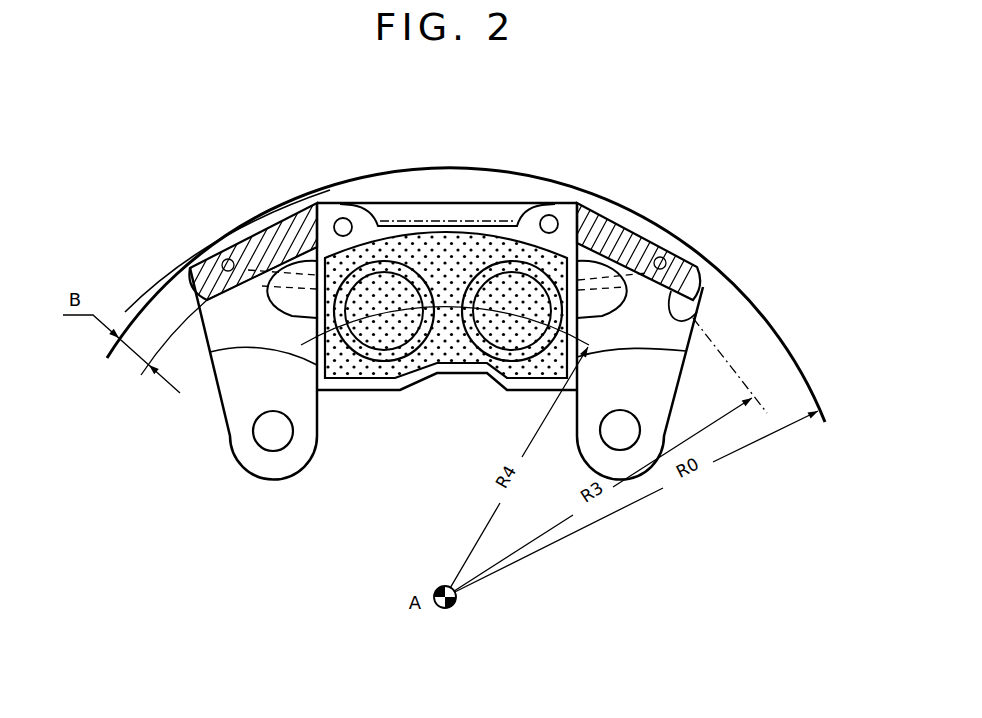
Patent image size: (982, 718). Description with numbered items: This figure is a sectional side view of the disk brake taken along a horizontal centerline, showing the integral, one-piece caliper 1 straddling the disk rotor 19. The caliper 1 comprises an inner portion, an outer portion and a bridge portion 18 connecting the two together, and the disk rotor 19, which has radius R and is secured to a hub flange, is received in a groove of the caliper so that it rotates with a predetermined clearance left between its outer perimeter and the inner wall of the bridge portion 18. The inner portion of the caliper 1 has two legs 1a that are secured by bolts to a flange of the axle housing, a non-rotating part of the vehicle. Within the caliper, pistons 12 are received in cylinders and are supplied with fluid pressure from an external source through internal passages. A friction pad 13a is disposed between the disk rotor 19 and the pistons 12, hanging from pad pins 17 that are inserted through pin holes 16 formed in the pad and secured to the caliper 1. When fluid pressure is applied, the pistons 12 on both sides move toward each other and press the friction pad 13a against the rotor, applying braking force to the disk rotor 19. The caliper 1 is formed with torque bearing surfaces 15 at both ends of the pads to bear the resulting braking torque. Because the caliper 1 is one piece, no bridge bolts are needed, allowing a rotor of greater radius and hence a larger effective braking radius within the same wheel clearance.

The caliper 1 is at (657, 222).
The legs 1a is at (243, 448).
The pistons 12 is at (489, 368).
The friction pad 13a is at (403, 222).
The torque bearing surfaces 15 is at (308, 352).
The pin holes 16 is at (550, 216).
The pad pins 17 is at (340, 219).
The bridge portion 18 is at (690, 315).
The disk rotor 19 is at (690, 351).